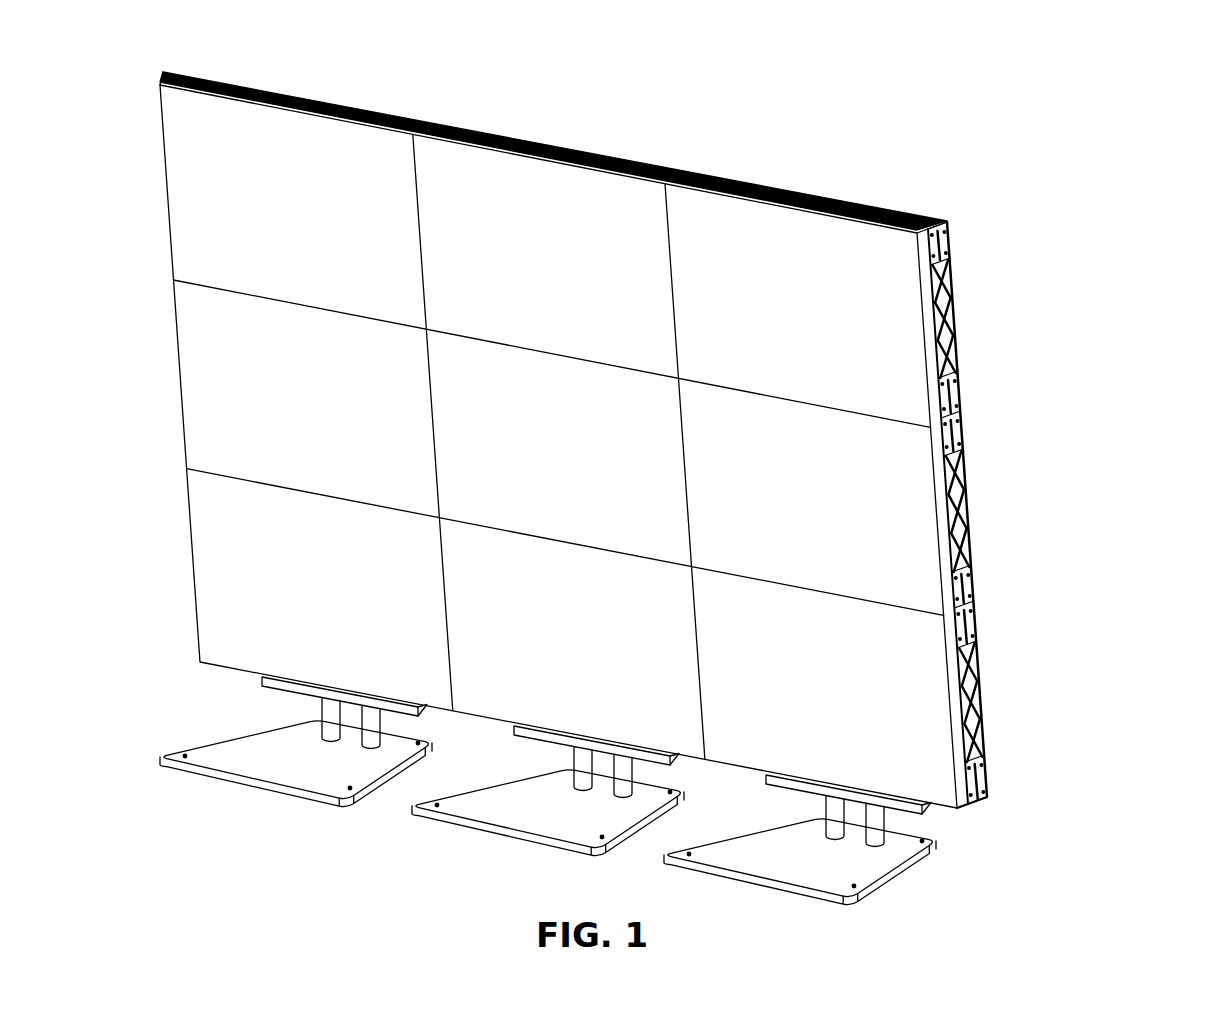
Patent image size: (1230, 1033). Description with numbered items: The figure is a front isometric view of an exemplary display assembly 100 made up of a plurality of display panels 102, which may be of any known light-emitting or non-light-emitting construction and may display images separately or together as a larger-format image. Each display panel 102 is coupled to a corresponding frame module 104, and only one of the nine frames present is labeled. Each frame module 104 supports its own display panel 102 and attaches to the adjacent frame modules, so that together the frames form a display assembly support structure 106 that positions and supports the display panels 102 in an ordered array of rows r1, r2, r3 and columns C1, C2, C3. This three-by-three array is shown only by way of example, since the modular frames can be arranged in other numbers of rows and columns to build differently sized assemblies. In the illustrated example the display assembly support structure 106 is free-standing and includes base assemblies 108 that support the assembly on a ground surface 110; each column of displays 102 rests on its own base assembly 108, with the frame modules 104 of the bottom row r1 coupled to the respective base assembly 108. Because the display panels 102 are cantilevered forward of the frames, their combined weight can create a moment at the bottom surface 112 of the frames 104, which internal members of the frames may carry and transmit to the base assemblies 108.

The display assembly 100 is at (1121, 71).
The display panel 102 is at (266, 228).
The frame module 104 is at (953, 300).
The display assembly support structure 106 is at (981, 514).
The base assembly 108 is at (281, 699).
The ground surface 110 is at (309, 886).
The bottom surface 112 is at (981, 801).
The column C1 is at (250, 86).
The column C2 is at (500, 136).
The column C3 is at (752, 186).
The row r1 is at (165, 198).
The row r2 is at (178, 376).
The row r3 is at (192, 591).